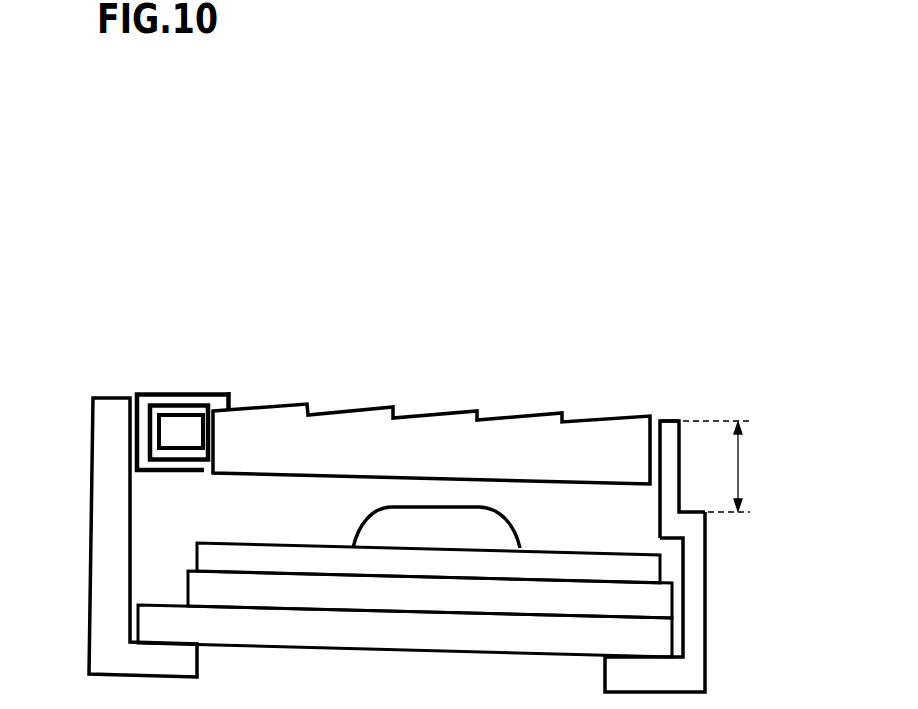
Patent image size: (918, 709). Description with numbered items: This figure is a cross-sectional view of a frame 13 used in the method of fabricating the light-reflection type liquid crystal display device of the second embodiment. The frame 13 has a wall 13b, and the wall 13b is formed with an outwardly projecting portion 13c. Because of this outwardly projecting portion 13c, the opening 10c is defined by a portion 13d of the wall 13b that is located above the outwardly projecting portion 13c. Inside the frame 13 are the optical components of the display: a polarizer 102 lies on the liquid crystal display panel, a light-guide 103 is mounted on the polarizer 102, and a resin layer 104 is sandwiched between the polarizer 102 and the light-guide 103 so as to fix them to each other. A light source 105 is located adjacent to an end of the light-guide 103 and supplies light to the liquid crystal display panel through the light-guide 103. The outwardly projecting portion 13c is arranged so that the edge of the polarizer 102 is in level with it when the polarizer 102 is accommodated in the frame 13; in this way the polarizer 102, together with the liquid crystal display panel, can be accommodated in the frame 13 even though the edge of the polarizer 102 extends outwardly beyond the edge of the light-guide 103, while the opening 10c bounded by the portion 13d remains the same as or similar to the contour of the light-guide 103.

The frame 13 is at (93, 458).
The wall 13b is at (705, 653).
The outwardly projecting portion 13c is at (668, 545).
The portion of the wall 13d is at (741, 465).
The opening 10c is at (656, 418).
The light source 105 is at (172, 413).
The light-guide 103 is at (323, 412).
The resin layer 104 is at (492, 545).
The polarizer 102 is at (645, 572).